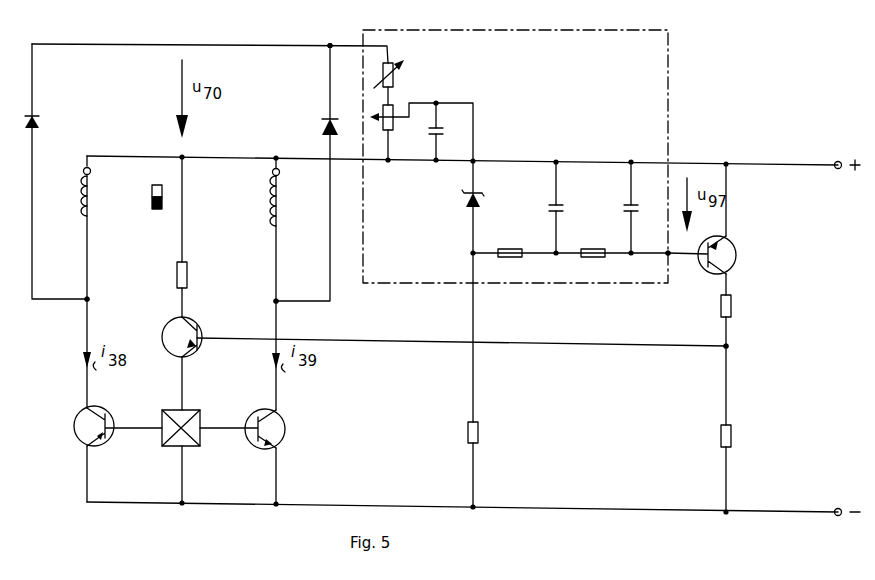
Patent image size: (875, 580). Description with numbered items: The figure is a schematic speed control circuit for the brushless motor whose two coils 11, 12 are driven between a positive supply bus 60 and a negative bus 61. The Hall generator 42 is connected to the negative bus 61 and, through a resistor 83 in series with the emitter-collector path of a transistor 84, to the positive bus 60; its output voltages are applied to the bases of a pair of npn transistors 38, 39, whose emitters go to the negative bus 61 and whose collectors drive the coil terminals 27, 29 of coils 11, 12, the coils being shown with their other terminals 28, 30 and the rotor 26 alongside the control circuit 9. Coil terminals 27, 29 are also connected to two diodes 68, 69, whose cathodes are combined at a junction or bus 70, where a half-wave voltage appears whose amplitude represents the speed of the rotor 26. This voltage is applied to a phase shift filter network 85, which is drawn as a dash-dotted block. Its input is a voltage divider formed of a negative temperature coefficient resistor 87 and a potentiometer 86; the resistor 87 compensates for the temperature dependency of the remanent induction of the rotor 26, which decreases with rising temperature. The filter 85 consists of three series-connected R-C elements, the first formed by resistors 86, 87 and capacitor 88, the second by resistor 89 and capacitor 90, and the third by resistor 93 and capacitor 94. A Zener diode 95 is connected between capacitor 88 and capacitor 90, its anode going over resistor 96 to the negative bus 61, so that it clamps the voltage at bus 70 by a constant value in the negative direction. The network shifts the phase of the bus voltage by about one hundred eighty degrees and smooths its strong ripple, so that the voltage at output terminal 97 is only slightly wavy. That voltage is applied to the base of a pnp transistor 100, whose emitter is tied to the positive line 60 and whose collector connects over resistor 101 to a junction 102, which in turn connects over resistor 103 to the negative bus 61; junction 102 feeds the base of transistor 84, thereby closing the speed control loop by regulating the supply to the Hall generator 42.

The control circuit 9 is at (224, 206).
The coil 11 is at (92, 214).
The coil 12 is at (282, 224).
The rotor 26 is at (151, 190).
The coil terminal 27 is at (91, 300).
The coil terminal 28 is at (91, 171).
The coil terminal 29 is at (278, 303).
The coil terminal 30 is at (280, 172).
The npn transistor 38 is at (80, 420).
The npn transistor 39 is at (279, 424).
The Hall generator 42 is at (196, 414).
The positive supply bus 60 is at (796, 164).
The negative bus 61 is at (786, 512).
The diode 68 is at (33, 120).
The diode 69 is at (322, 128).
The junction or bus 70 is at (330, 45).
The resistor 83 is at (187, 273).
The transistor 84 is at (183, 318).
The phase shift filter network 85 is at (543, 31).
The potentiometer 86 is at (393, 120).
The negative temperature coefficient resistor 87 is at (393, 62).
The capacitor 88 is at (445, 128).
The resistor 89 is at (505, 252).
The capacitor 90 is at (549, 208).
The resistor 93 is at (588, 252).
The capacitor 94 is at (624, 208).
The Zener diode 95 is at (466, 200).
The resistor 96 is at (478, 428).
The output terminal 97 is at (669, 256).
The pnp transistor 100 is at (736, 257).
The resistor 101 is at (731, 307).
The junction 102 is at (730, 347).
The resistor 103 is at (731, 437).